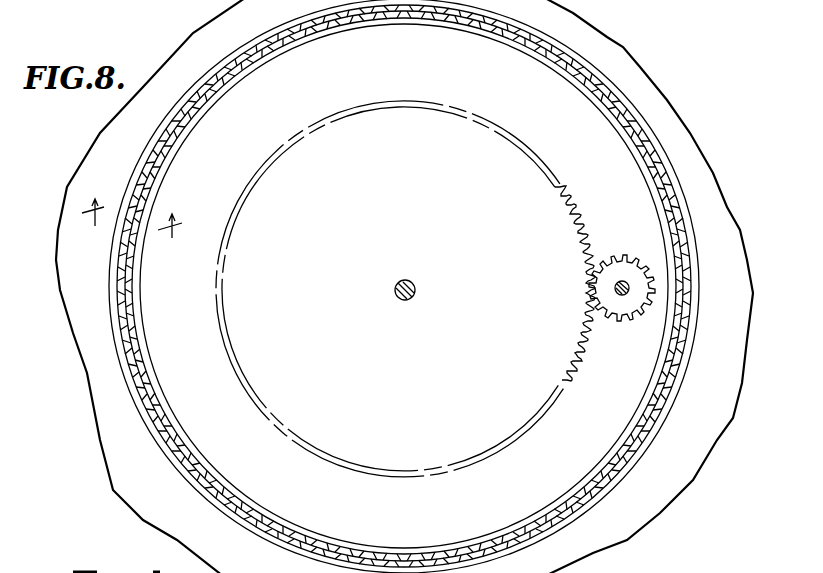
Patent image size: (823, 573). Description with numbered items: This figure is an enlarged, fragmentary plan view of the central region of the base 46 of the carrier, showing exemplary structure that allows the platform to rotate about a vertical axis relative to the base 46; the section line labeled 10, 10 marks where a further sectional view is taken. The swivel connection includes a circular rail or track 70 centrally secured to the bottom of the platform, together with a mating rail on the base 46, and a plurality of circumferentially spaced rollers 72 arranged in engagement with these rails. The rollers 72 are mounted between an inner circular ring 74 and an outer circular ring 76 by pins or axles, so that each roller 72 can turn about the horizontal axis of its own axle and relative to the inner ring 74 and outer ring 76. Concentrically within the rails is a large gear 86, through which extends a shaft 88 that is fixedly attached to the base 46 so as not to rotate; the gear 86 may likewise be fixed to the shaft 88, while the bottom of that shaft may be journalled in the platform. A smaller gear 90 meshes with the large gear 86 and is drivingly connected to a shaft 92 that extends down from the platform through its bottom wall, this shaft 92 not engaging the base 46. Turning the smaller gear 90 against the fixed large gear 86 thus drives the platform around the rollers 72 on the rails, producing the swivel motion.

The section line 10- 10 is at (135, 207).
The base 46 is at (720, 222).
The circular rail or track 70 is at (672, 350).
The rollers 72 is at (460, 22).
The inner circular ring 74 is at (650, 172).
The outer circular ring 76 is at (698, 280).
The large gear 86 is at (444, 380).
The shaft 88 is at (416, 292).
The smaller gear 90 is at (626, 268).
The shaft 92 is at (620, 296).